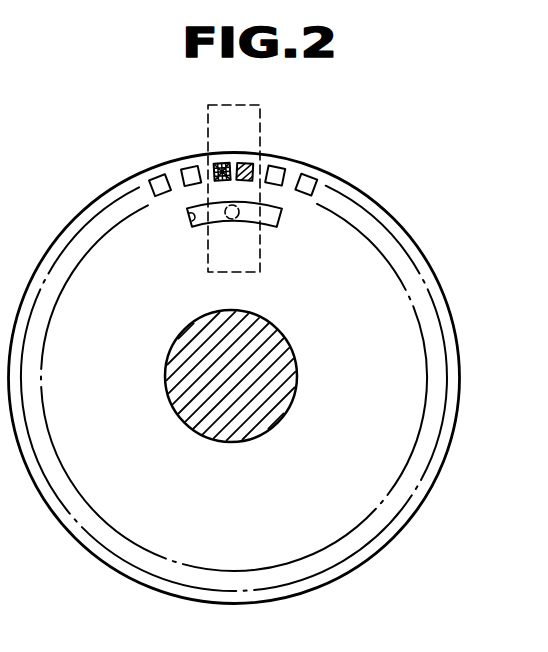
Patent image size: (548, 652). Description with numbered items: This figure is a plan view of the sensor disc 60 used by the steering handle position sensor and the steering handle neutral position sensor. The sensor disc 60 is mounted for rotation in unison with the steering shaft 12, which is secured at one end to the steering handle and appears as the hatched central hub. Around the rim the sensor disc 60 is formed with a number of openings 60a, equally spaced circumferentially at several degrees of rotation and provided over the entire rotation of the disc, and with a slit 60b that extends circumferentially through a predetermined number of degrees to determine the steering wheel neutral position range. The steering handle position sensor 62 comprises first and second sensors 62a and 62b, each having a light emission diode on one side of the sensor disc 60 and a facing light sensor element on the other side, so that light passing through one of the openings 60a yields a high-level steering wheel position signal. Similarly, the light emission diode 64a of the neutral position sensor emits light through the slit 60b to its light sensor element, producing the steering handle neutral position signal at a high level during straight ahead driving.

The steering shaft 12 is at (290, 377).
The sensor disc 60 is at (415, 247).
The openings 60a is at (313, 181).
The slit 60b is at (188, 222).
The steering handle position sensor 62 is at (320, 177).
The first sensor 62a is at (220, 166).
The second sensor 62b is at (246, 168).
The light emission diode 64a is at (242, 212).